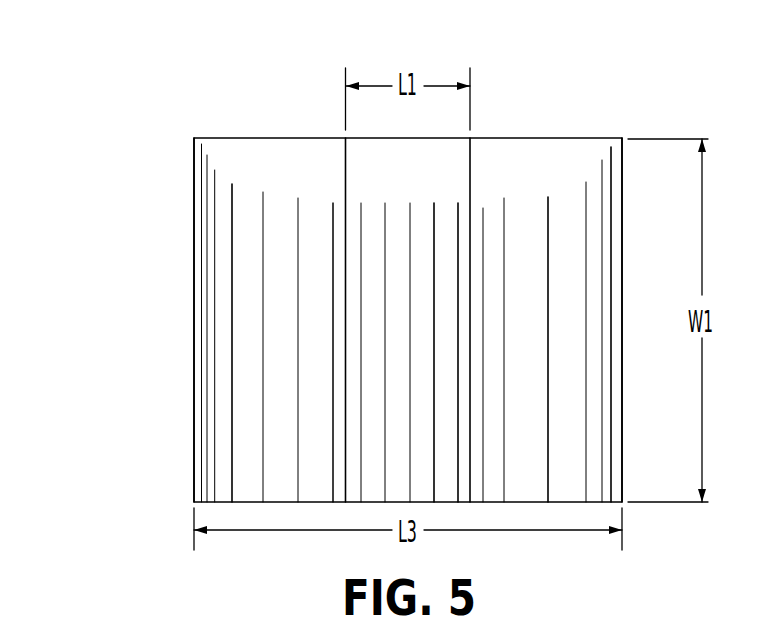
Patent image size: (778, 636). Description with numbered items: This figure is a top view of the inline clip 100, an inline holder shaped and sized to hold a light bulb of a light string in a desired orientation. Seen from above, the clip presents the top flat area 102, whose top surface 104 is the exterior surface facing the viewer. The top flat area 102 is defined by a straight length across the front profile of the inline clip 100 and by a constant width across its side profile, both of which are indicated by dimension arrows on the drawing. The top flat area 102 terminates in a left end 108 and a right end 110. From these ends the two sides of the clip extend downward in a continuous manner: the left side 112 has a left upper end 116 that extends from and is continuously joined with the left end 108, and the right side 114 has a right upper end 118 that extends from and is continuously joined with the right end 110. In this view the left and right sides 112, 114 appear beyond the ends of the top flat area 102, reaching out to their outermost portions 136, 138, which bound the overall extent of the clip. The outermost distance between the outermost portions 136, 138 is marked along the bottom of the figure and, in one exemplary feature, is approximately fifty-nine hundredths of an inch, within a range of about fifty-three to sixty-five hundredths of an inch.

The inline clip 100 is at (103, 94).
The top flat area 102 is at (419, 214).
The top surface 104 is at (470, 224).
The left end 108 is at (346, 157).
The right end 110 is at (442, 223).
The left side 112 is at (252, 302).
The right side 114 is at (560, 213).
The left upper end 116 is at (345, 228).
The right upper end 118 is at (471, 214).
The outermost portion 136 is at (193, 350).
The outermost portion 138 is at (622, 275).